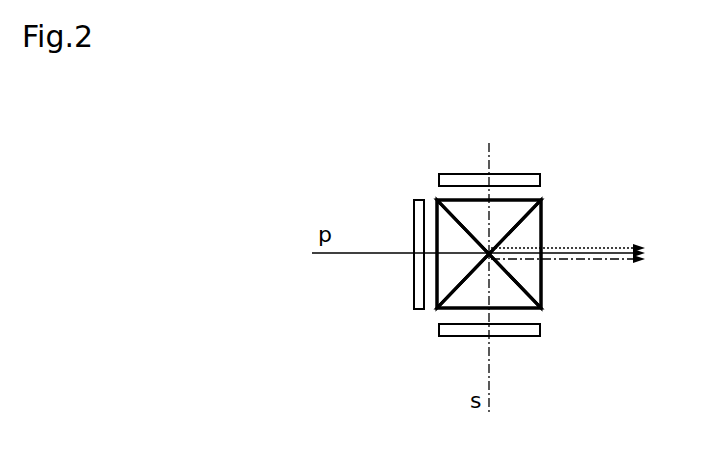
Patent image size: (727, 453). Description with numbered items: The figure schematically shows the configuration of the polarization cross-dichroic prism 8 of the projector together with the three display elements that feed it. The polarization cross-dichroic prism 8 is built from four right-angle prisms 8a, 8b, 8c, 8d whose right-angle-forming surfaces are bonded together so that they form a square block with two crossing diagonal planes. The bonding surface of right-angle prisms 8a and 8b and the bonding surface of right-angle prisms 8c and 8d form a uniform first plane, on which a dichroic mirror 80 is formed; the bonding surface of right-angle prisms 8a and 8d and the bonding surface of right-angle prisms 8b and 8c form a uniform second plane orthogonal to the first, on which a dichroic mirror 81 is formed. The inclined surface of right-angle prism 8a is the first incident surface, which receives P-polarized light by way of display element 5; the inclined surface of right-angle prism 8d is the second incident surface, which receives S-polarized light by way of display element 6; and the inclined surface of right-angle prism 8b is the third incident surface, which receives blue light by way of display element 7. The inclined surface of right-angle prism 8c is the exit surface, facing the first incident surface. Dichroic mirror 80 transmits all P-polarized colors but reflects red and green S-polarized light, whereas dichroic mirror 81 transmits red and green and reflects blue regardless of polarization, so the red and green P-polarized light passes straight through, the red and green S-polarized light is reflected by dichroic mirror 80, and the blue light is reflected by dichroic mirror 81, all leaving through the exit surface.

The display element 5 is at (414, 200).
The display element 6 is at (535, 337).
The display element 7 is at (482, 174).
The polarization cross-dichroic prism 8 is at (550, 194).
The right-angle prism 8a is at (443, 288).
The right-angle prism 8b is at (503, 207).
The right-angle prism 8c is at (535, 287).
The right-angle prism 8d is at (467, 298).
The dichroic mirror 80 is at (517, 225).
The dichroic mirror 81 is at (513, 270).